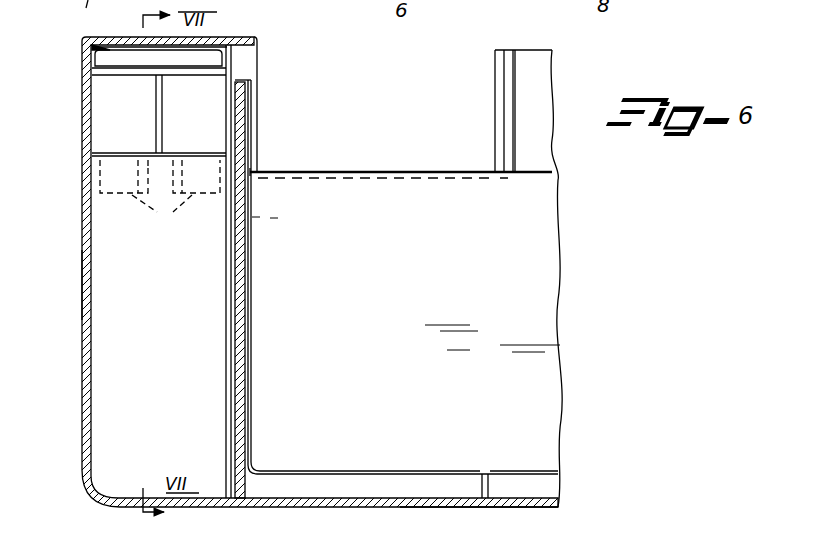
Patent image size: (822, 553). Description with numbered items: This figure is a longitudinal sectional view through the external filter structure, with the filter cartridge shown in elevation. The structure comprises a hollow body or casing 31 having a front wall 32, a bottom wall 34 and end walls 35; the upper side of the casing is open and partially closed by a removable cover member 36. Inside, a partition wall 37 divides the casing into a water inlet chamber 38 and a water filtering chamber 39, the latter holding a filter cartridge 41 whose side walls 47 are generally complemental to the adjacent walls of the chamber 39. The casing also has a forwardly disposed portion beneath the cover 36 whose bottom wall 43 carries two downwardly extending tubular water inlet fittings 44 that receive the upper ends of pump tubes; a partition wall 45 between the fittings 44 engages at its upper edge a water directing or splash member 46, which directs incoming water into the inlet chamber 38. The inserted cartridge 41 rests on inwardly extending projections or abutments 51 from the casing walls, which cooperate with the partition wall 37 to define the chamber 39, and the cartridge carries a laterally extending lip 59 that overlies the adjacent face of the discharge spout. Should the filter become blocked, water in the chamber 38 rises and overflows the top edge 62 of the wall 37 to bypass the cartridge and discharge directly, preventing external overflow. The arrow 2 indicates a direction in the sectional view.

The direction arrow 2 is at (528, 138).
The hollow body structure or casing 31 is at (270, 81).
The front wall 32 is at (117, 350).
The bottom wall 34 is at (372, 500).
The end walls 35 is at (97, 277).
The removable cover member 36 is at (225, 43).
The partition wall 37 is at (240, 130).
The water inlet chamber 38 is at (115, 233).
The water filtering chamber 39 is at (545, 488).
The filter cartridge 41 is at (546, 202).
The bottom wall 43 is at (170, 155).
The tubular water inlet fittings 44 is at (160, 200).
The partition wall 45 is at (162, 118).
The water directing or splash member 46 is at (128, 78).
The side walls 47 is at (545, 270).
The projections or abutments 51 is at (495, 483).
The laterally extending lip 59 is at (425, 177).
The top edge 62 is at (245, 80).